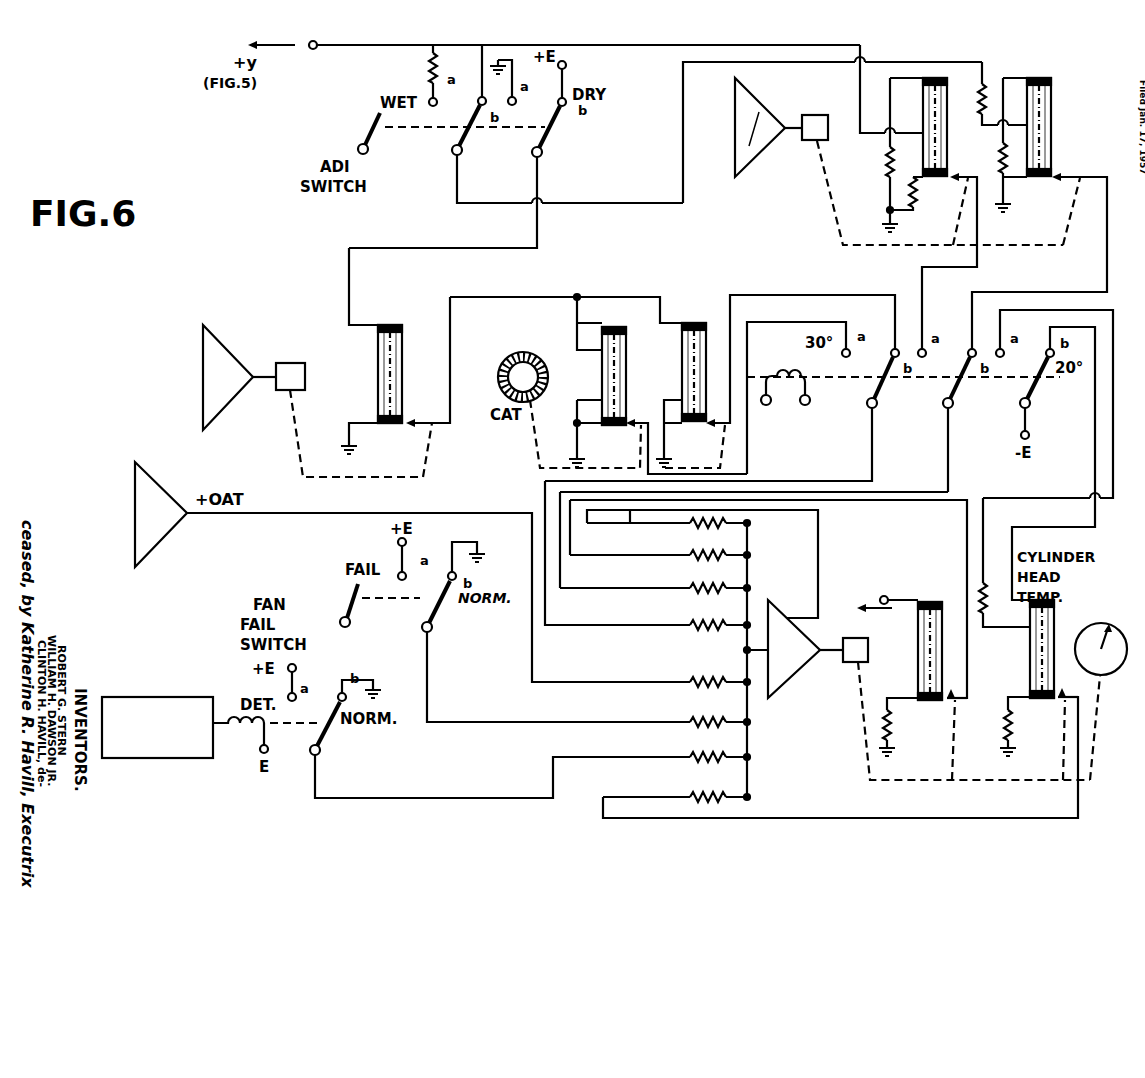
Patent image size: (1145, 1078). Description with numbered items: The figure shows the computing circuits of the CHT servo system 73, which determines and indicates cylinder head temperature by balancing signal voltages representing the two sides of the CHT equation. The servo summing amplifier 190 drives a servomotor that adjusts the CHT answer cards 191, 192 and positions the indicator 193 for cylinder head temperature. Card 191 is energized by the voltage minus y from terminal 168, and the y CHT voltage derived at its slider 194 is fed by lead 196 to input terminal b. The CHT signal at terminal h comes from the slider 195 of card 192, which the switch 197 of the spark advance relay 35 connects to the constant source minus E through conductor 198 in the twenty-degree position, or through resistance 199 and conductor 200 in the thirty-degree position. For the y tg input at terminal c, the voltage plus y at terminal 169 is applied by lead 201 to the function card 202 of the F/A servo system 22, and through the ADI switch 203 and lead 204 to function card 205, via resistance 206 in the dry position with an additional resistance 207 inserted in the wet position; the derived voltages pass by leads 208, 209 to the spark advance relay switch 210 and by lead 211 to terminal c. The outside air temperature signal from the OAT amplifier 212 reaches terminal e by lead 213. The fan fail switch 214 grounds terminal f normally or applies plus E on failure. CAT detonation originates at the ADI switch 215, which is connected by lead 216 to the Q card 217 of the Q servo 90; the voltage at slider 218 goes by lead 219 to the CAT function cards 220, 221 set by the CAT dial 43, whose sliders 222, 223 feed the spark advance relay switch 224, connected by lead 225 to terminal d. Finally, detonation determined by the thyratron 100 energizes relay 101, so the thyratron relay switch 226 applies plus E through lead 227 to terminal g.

The transformer secondary terminal 169 is at (316, 48).
The lead 201 is at (618, 45).
The resistance 207 is at (428, 66).
The ADI switch 203 is at (466, 135).
The ADI switch 215 is at (545, 138).
The lead 204 is at (686, 203).
The F/A servo system 22 is at (849, 97).
The function card 202 is at (947, 142).
The resistance 206 is at (986, 80).
The function card 205 is at (1043, 112).
The lead 209 is at (916, 266).
The lead 208 is at (1105, 272).
The lead 216 is at (349, 283).
The Q card 217 is at (400, 324).
The slider 218 is at (412, 421).
The Q servo 90 is at (293, 337).
The lead 219 is at (512, 297).
The CAT function card 220 is at (628, 377).
The slider 222 is at (634, 419).
The dial 43 is at (523, 352).
The CAT function card 221 is at (690, 322).
The slider 223 is at (712, 428).
The spark advance relay 35 is at (782, 374).
The spark advance relay switch 224 is at (878, 384).
The spark advance relay switch 210 is at (952, 381).
The switch 197 is at (1034, 384).
The lead 211 is at (875, 492).
The lead 196 is at (855, 500).
The conductor 200 is at (1084, 498).
The conductor 198 is at (1077, 528).
The lead 225 is at (545, 484).
The OAT amplifier 212 is at (160, 478).
The lead 213 is at (310, 514).
The fan fail switch 214 is at (438, 612).
The thyratron relay switch 226 is at (326, 737).
The electronic relay 100 is at (165, 705).
The relay 101 is at (238, 735).
The lead 227 is at (553, 780).
The CHT servo system 73 is at (948, 562).
The servo summing amplifier 190 is at (800, 670).
The terminal 168 is at (888, 597).
The CHT answer card 191 is at (920, 656).
The slider 194 is at (949, 706).
The resistance 199 is at (986, 600).
The CHT answer card 192 is at (1035, 660).
The slider 195 is at (1058, 706).
The indicator 193 is at (1094, 626).